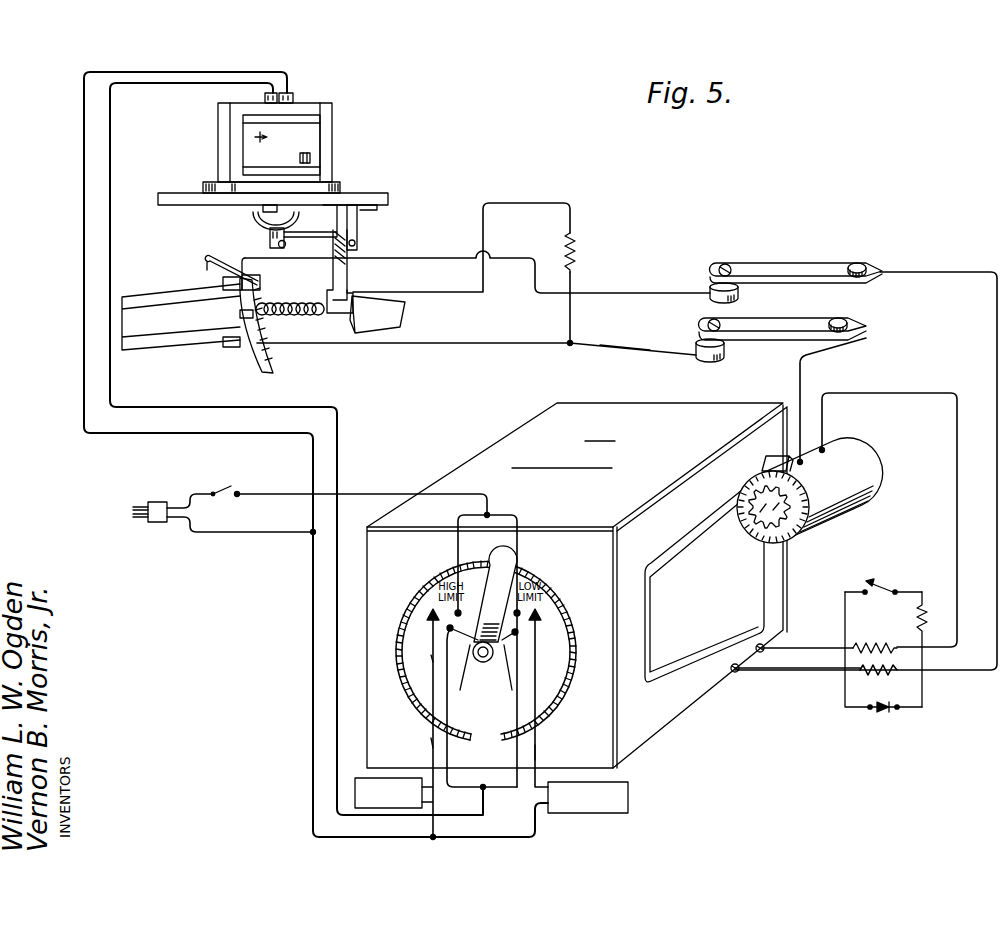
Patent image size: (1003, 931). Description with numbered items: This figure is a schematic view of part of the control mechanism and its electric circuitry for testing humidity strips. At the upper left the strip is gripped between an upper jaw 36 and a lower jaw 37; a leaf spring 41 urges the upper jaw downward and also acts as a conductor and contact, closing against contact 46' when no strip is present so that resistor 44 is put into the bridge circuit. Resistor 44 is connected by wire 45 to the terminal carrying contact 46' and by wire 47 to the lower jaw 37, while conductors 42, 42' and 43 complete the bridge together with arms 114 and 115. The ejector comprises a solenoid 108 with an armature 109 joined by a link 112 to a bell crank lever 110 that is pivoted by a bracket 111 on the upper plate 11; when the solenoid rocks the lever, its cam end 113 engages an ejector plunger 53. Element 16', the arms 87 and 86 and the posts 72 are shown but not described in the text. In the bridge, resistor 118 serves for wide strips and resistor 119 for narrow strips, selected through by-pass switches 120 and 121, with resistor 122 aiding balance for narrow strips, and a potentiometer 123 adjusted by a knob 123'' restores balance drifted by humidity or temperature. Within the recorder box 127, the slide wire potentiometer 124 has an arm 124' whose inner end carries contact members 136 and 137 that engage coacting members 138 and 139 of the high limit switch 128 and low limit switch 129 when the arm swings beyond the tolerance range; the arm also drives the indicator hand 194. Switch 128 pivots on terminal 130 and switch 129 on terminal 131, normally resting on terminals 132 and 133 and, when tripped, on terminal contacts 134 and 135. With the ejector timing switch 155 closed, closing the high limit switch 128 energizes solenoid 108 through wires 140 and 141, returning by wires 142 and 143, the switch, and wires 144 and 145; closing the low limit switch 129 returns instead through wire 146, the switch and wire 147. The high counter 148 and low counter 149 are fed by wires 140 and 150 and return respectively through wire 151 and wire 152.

The ejector solenoid 108 is at (327, 135).
The upper plate 11 is at (380, 193).
The armature 109 is at (253, 218).
The link 112 is at (270, 234).
The bracket 111 is at (360, 232).
The bell crank lever 110 is at (350, 275).
The cam end 113 is at (400, 312).
The card flange 16' is at (197, 336).
The lower jaw 37 is at (240, 345).
The ejector plunger 53 is at (246, 313).
The upper jaw 36 is at (222, 282).
The spring 41 is at (252, 280).
The contact 46' is at (210, 287).
The wire 141 is at (84, 247).
The wire 142 is at (110, 242).
The wire 47 is at (420, 347).
The conductor 43 is at (613, 343).
The wire 45 is at (523, 203).
The resistor 44 is at (575, 245).
The conductor 42' is at (477, 272).
The arm 87 is at (790, 263).
The arm 86 is at (792, 325).
The post 72 is at (738, 296).
The arm 115 is at (800, 387).
The recorder box 127 is at (577, 585).
The hand 194 is at (712, 537).
The potentiometer 123 is at (838, 488).
The knob 123'' is at (797, 514).
The slide wire potentiometer 124 is at (497, 650).
The potentiometer arm 124' is at (490, 587).
The contact member 137 is at (486, 661).
The wire 145 is at (365, 494).
The wire 144 is at (457, 517).
The wire 147 is at (515, 515).
The terminal contact 134 is at (456, 611).
The terminal contact 135 is at (519, 611).
The terminal 132 is at (428, 615).
The terminal 133 is at (540, 615).
The high limit switch 128 is at (430, 620).
The low limit switch 129 is at (538, 620).
The terminal 130 is at (448, 630).
The terminal 131 is at (517, 634).
The wire 143 is at (447, 712).
The wire 146 is at (517, 718).
The contact member 136 is at (462, 676).
The coacting member 139 is at (502, 676).
The coacting member 138 is at (430, 660).
The wire 152 is at (430, 742).
The wire 151 is at (535, 752).
The wire 150 is at (313, 738).
The low counter 149 is at (355, 798).
The high counter 148 is at (628, 800).
The ejector timing switch 155 is at (207, 493).
The wire 140 is at (211, 533).
The switch 120 is at (887, 590).
The resistor 122 is at (925, 620).
The switch 121 is at (880, 710).
The resistor 118 is at (853, 647).
The arm 114 is at (793, 647).
The resistor 119 is at (893, 676).
The conductor 42 is at (797, 681).